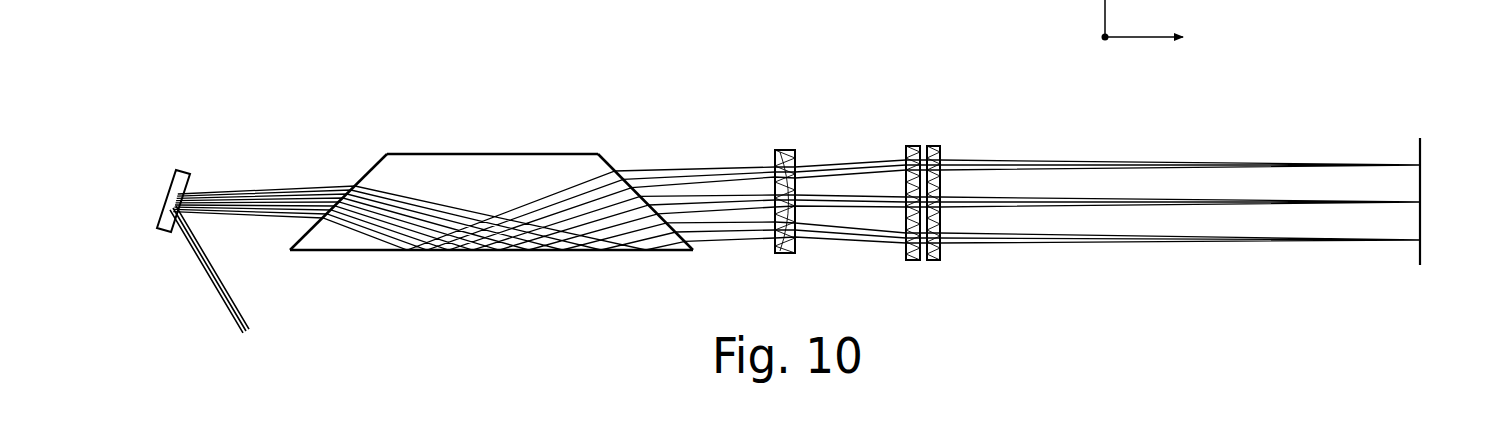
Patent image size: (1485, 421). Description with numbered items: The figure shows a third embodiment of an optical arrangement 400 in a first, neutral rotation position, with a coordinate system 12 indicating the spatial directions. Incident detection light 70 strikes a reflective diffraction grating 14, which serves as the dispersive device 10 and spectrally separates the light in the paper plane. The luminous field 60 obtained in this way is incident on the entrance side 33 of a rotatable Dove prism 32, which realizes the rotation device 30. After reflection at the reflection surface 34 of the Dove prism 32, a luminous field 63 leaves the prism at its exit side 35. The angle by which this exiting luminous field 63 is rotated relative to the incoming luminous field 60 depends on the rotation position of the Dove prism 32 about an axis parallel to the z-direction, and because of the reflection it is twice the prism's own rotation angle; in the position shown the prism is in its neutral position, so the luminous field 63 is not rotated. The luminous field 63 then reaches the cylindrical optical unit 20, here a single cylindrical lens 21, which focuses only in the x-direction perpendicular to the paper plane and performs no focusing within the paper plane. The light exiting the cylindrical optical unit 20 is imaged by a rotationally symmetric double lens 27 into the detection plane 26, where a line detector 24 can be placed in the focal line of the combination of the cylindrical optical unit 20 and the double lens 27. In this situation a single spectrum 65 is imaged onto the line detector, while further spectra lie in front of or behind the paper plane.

The optical arrangement 400 is at (700, 92).
The coordinate system 12 is at (1105, 3).
The dispersive device 10 is at (145, 171).
The reflective diffraction grating 14 is at (176, 187).
The incident detection light 70 is at (217, 290).
The spectrum 65 is at (252, 203).
The luminous field 60 is at (295, 163).
The rotated luminous field 63 is at (755, 192).
The rotation device 30 is at (491, 208).
The Dove prism 32 is at (488, 168).
The entrance side 33 is at (377, 163).
The reflection surface 34 is at (355, 253).
The exit side 35 is at (617, 160).
The cylindrical optical unit 20 is at (801, 169).
The cylindrical lens 21 is at (780, 150).
The rotationally symmetric double lens 27 is at (912, 146).
The line detector 24 is at (1350, 189).
The detection plane 26 is at (1418, 150).